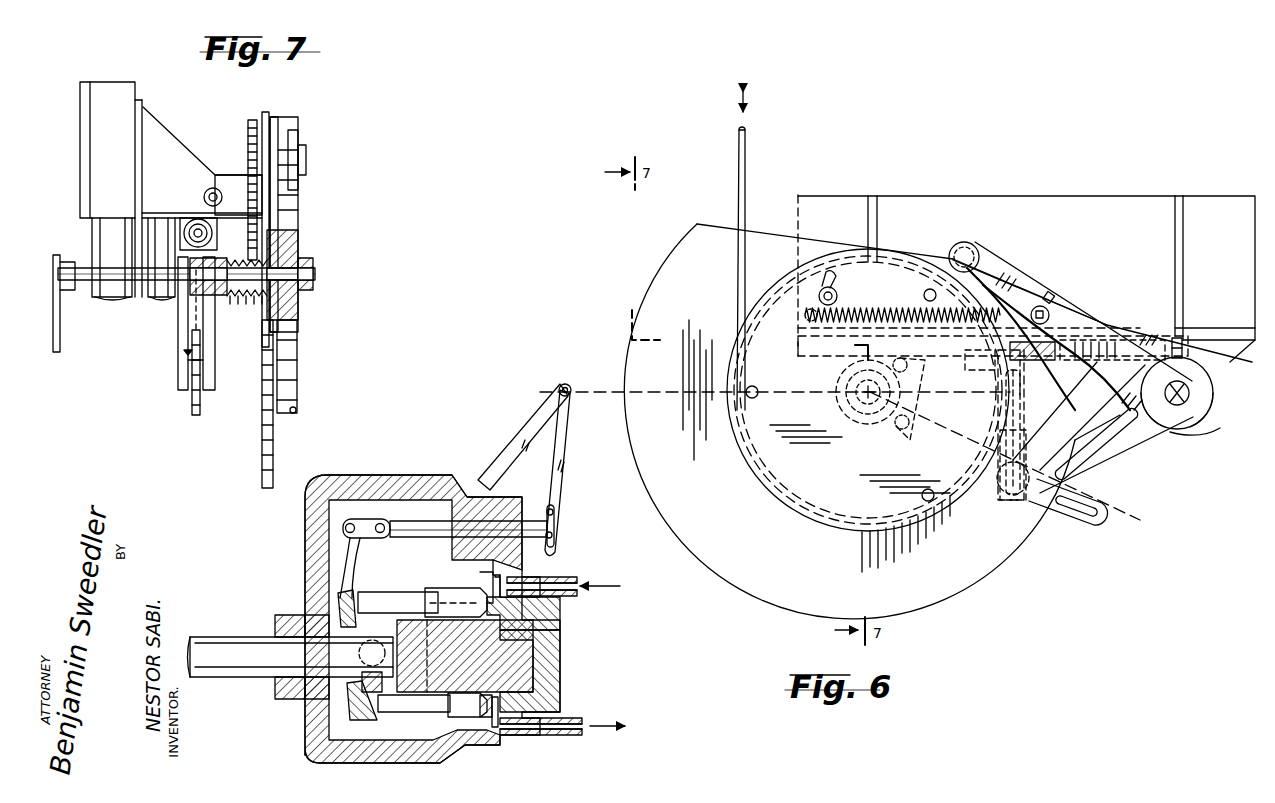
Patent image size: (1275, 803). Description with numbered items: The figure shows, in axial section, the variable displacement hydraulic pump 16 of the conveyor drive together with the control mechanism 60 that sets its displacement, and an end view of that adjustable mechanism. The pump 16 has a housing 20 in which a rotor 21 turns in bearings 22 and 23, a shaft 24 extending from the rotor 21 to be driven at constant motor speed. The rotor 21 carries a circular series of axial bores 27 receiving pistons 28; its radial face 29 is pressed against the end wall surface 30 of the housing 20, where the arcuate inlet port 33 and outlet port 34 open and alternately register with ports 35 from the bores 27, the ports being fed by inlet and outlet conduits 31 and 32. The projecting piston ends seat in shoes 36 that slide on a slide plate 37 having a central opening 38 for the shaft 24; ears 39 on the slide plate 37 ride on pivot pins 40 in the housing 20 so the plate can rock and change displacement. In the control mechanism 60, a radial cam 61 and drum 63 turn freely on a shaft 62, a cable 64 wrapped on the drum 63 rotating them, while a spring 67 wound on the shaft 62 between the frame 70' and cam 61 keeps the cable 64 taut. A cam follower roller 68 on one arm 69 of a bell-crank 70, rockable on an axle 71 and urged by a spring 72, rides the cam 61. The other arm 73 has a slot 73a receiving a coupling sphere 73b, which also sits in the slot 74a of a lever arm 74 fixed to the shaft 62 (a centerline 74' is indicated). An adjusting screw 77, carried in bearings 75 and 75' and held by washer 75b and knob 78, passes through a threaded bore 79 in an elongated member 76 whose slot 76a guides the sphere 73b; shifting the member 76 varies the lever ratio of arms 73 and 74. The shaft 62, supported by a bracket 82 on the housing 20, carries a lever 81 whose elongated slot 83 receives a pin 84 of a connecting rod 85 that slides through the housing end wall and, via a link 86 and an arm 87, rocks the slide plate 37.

In FIG. 7, the variable displacement hydraulic pump 16 is at (405, 478).
In FIG. 7, the housing 20 is at (343, 760).
In FIG. 7, the rotor 21 is at (520, 648).
In FIG. 7, the bearing 22 is at (545, 688).
In FIG. 7, the bearing 23 is at (298, 700).
In FIG. 7, the shaft 24 is at (220, 675).
In FIG. 7, the bores 27 is at (448, 596).
In FIG. 7, the pistons 28 is at (410, 585).
In FIG. 7, the radial face 29 is at (558, 620).
In FIG. 7, the end wall surface 30 is at (512, 572).
In FIG. 7, the inlet conduit 31 is at (568, 595).
In FIG. 7, the outlet conduit 32 is at (550, 735).
In FIG. 7, the inlet port 33 is at (490, 600).
In FIG. 7, the outlet port 34 is at (495, 730).
In FIG. 7, the ports 35 is at (486, 720).
In FIG. 7, the shoes 36 is at (352, 720).
In FIG. 7, the slide plate 37 is at (318, 580).
In FIG. 7, the central opening 38 is at (310, 608).
In FIG. 7, the ears 39 is at (380, 682).
In FIG. 7, the pivot pins 40 is at (380, 640).
In FIG. 6, the control mechanism 60 is at (627, 343).
In FIG. 7, the radial cam 61 is at (262, 458).
In FIG. 6, the radial cam 61 is at (966, 560).
In FIG. 7, the shaft 62 is at (145, 292).
In FIG. 6, the shaft 62 is at (840, 385).
In FIG. 7, the drum 63 is at (296, 212).
In FIG. 6, the drum 63 is at (768, 480).
In FIG. 7, the cable 64 is at (293, 414).
In FIG. 6, the cable 64 is at (746, 146).
In FIG. 7, the spring 67 is at (248, 303).
In FIG. 6, the spring 67 is at (858, 420).
In FIG. 7, the cam follower roller 68 is at (296, 130).
In FIG. 6, the cam follower roller 68 is at (966, 248).
In FIG. 7, the arm 69 is at (250, 120).
In FIG. 6, the arm 69 is at (1020, 280).
In FIG. 7, the bell-crank 70 is at (234, 229).
In FIG. 6, the bell-crank 70 is at (1072, 311).
In FIG. 7, the frame 70' is at (171, 191).
In FIG. 6, the frame 70' is at (1026, 268).
In FIG. 6, the axle 71 is at (1195, 426).
In FIG. 7, the spring 72 is at (217, 190).
In FIG. 6, the spring 72 is at (874, 315).
In FIG. 7, the arm 73 is at (200, 368).
In FIG. 6, the arm 73 is at (1100, 463).
In FIG. 6, the slot 73a is at (1128, 428).
In FIG. 7, the coupling sphere 73b is at (186, 366).
In FIG. 6, the coupling sphere 73b is at (1005, 488).
In FIG. 7, the lever arm 74 is at (172, 342).
In FIG. 6, the link centerline 74' is at (907, 455).
In FIG. 6, the slot 74a is at (1078, 528).
In FIG. 6, the bearing 75 is at (994, 425).
In FIG. 6, the bearing 75' is at (1112, 329).
In FIG. 6, the washer 75b is at (978, 384).
In FIG. 7, the elongated member 76 is at (178, 350).
In FIG. 6, the elongated member 76 is at (1000, 398).
In FIG. 6, the slot 76a is at (1040, 386).
In FIG. 6, the adjusting screw 77 is at (1082, 362).
In FIG. 6, the knob 78 is at (1190, 335).
In FIG. 7, the threaded bore 79 is at (195, 220).
In FIG. 6, the threaded bore 79 is at (1050, 358).
In FIG. 7, the lever 81 is at (60, 345).
In FIG. 7, the bracket 82 is at (530, 428).
In FIG. 7, the elongated slot 83 is at (558, 518).
In FIG. 7, the pin 84 is at (558, 536).
In FIG. 7, the connecting rod 85 is at (440, 514).
In FIG. 7, the link 86 is at (366, 518).
In FIG. 7, the arm 87 is at (362, 540).